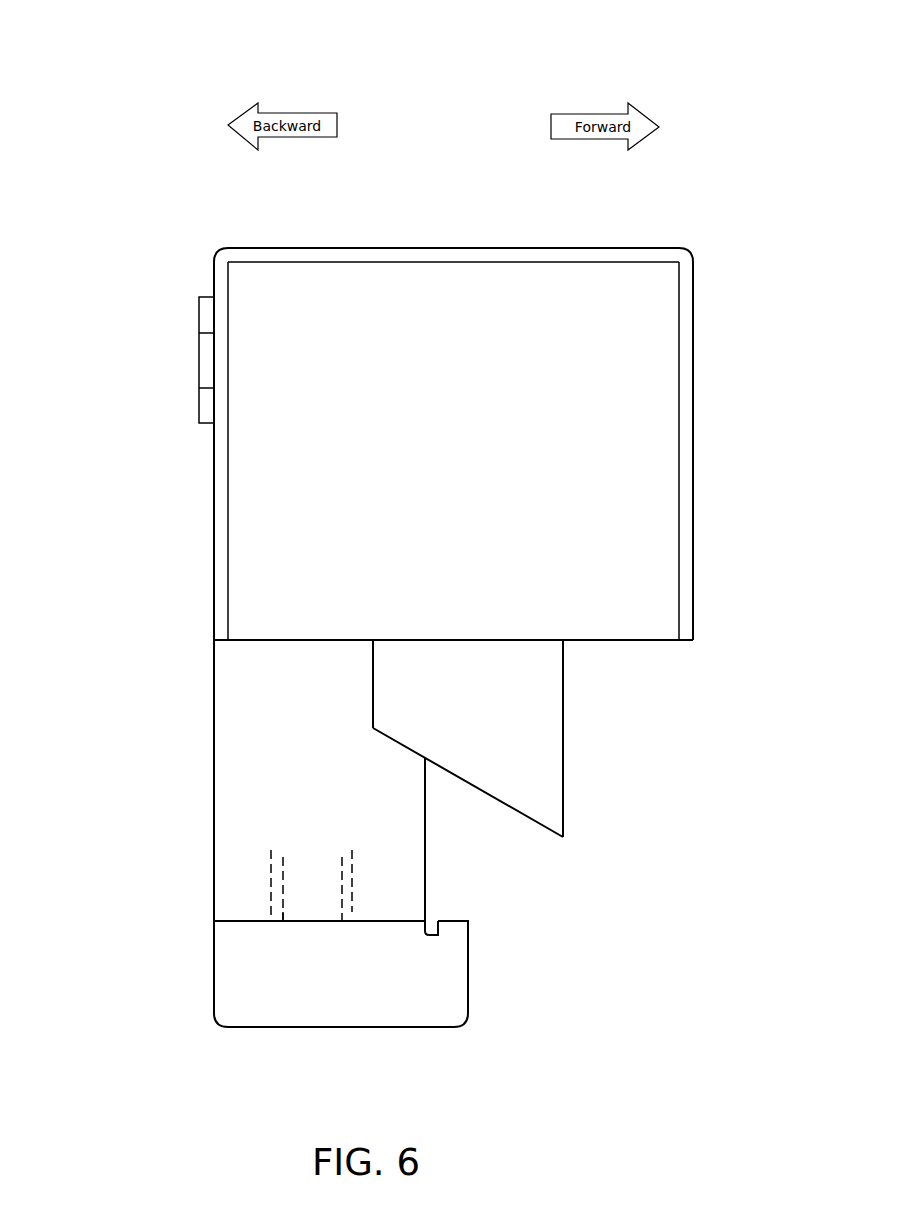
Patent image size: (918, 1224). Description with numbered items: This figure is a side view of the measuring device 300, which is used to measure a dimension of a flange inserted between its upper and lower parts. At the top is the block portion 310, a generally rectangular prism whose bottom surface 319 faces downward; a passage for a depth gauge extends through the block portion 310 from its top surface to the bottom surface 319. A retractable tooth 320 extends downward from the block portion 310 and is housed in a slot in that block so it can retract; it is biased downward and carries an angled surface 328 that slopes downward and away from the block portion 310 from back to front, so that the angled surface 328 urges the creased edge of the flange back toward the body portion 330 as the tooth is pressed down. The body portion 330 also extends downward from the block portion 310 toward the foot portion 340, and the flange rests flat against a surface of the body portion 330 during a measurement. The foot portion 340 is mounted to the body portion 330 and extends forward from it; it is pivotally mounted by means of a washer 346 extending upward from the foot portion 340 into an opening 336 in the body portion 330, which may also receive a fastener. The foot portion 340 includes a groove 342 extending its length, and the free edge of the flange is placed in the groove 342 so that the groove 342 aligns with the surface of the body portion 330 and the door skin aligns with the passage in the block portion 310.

The measuring device 300 is at (191, 76).
The block portion 310 is at (443, 246).
The bottom surface 319 is at (625, 640).
The retractable tooth 320 is at (566, 787).
The angled surface 328 is at (496, 800).
The body portion 330 is at (225, 820).
The opening 336 is at (271, 870).
The washer 346 is at (282, 912).
The foot portion 340 is at (212, 977).
The groove 342 is at (437, 935).